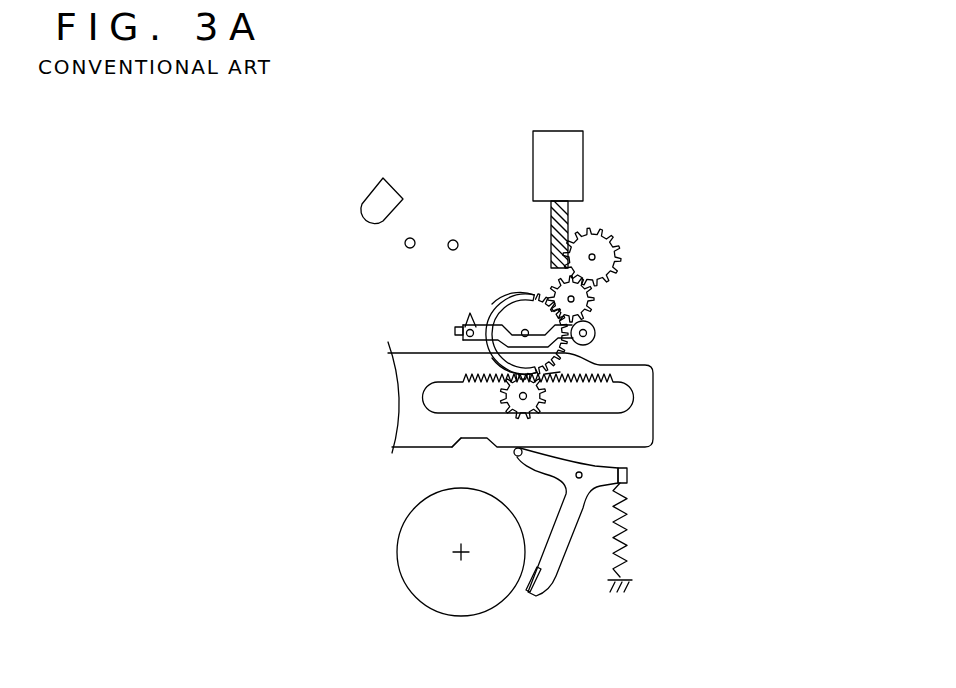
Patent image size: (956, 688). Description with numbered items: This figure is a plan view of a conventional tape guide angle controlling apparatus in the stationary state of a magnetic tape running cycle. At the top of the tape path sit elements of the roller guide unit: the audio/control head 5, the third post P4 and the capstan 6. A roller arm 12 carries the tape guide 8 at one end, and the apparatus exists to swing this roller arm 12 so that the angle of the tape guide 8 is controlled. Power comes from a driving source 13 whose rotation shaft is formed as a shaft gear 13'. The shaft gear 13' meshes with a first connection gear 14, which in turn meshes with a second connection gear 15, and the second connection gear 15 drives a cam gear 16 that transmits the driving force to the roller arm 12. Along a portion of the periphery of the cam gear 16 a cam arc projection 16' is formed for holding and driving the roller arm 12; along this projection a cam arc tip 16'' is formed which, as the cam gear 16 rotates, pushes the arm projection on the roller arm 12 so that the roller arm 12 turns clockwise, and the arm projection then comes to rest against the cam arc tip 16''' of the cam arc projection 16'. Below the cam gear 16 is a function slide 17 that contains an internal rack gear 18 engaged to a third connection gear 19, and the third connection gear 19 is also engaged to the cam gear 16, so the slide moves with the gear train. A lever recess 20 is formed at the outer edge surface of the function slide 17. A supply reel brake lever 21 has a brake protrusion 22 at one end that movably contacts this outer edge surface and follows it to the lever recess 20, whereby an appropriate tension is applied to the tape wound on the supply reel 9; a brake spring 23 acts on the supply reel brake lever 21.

The audio/control head 5 is at (393, 180).
The third post P4 is at (413, 238).
The capstan 6 is at (455, 239).
The tape guide 8 is at (462, 342).
The supply reel 9 is at (449, 609).
The roller arm 12 is at (533, 328).
The driving source 13 is at (590, 161).
The shaft gear 13' is at (597, 233).
The first connection gear 14 is at (623, 260).
The second connection gear 15 is at (597, 300).
The cam gear 16 is at (478, 331).
The cam arc projection 16' is at (482, 288).
The cam arc tip 16'' is at (627, 349).
The cam arc tip 16''' is at (432, 373).
The function slide 17 is at (387, 402).
The rack gear 18 is at (433, 408).
The third connection gear 19 is at (553, 401).
The lever recess 20 is at (463, 440).
The supply reel brake lever 21 is at (555, 578).
The brake protrusion 22 is at (513, 452).
The brake spring 23 is at (625, 560).